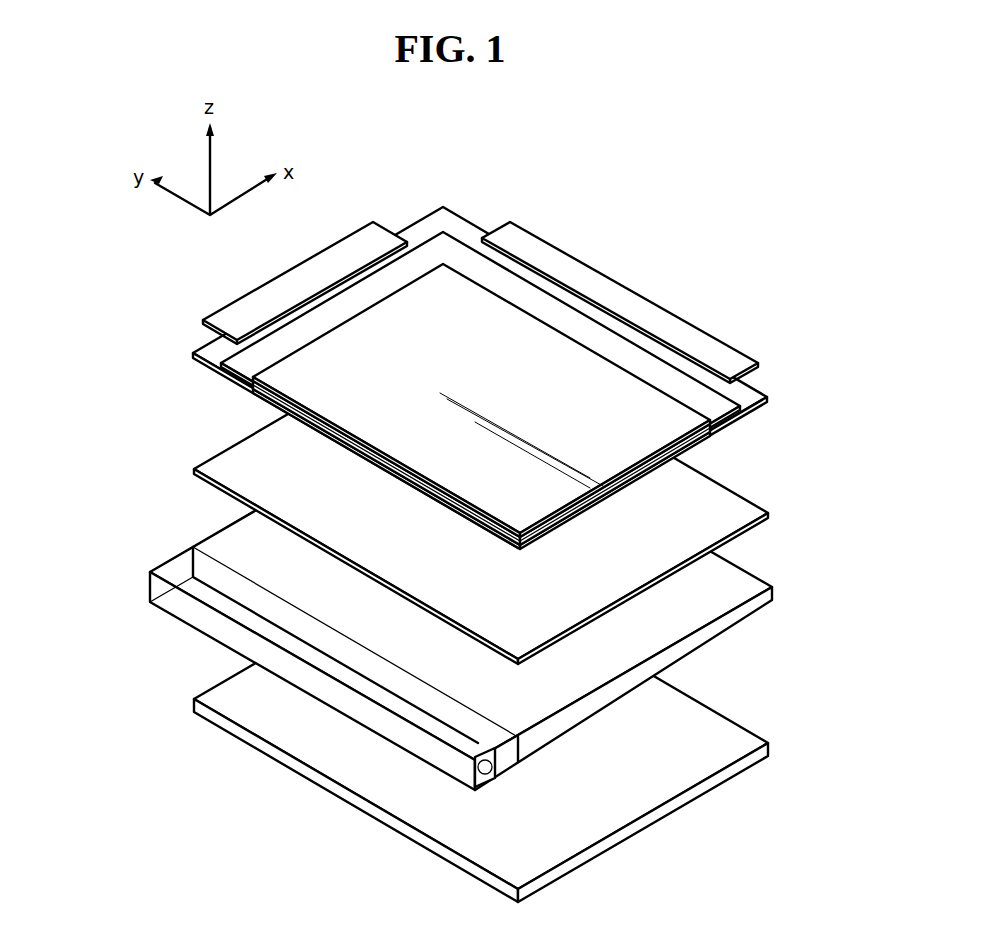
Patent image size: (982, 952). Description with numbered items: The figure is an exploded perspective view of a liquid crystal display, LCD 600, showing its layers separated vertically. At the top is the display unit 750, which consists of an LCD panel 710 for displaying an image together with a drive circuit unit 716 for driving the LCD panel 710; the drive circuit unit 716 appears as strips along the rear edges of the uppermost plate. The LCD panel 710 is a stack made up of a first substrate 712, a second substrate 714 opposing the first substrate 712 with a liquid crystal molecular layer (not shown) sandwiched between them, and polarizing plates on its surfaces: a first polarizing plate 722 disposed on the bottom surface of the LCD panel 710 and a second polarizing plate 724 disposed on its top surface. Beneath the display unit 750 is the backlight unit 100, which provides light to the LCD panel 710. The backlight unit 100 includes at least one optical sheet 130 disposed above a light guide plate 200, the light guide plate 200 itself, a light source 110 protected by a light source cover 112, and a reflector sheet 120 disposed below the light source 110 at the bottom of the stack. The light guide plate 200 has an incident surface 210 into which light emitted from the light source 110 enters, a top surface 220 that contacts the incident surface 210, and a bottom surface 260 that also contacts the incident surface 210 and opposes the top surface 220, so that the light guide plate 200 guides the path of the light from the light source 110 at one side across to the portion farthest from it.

The backlight unit 100 is at (510, 613).
The light source 110 is at (490, 782).
The light source cover 112 is at (330, 690).
The reflector sheet 120 is at (767, 729).
The optical sheet 130 is at (510, 493).
The light guide plate 200 is at (488, 651).
The incident surface 210 is at (549, 826).
The top surface 220 is at (225, 540).
The bottom surface 260 is at (703, 645).
The LCD 600 is at (396, 334).
The LCD panel 710 is at (409, 390).
The first substrate 712 is at (222, 360).
The second substrate 714 is at (245, 378).
The drive circuit unit 716 is at (232, 320).
The first polarizing plate 722 is at (255, 398).
The second polarizing plate 724 is at (283, 360).
The display unit 750 is at (396, 378).